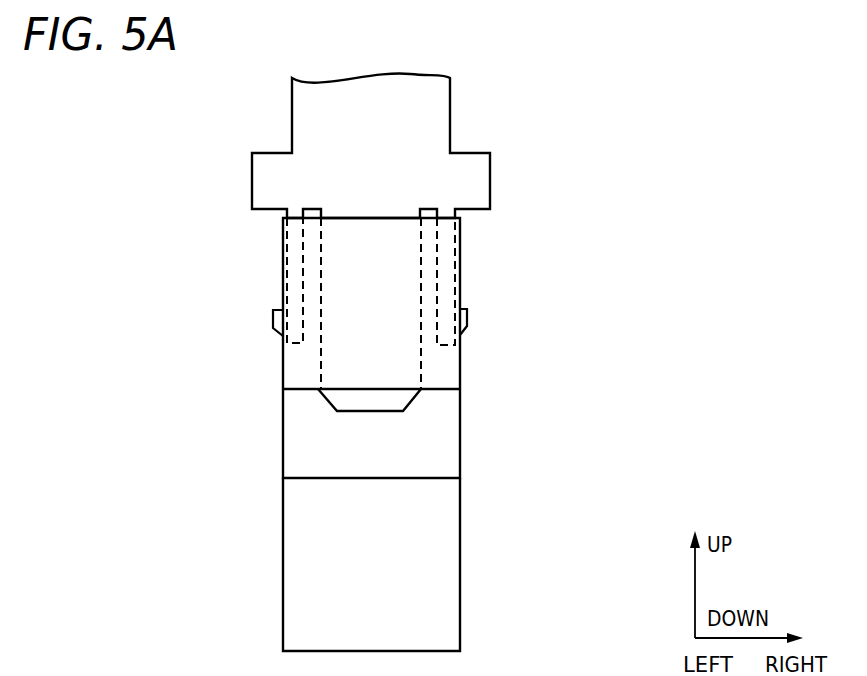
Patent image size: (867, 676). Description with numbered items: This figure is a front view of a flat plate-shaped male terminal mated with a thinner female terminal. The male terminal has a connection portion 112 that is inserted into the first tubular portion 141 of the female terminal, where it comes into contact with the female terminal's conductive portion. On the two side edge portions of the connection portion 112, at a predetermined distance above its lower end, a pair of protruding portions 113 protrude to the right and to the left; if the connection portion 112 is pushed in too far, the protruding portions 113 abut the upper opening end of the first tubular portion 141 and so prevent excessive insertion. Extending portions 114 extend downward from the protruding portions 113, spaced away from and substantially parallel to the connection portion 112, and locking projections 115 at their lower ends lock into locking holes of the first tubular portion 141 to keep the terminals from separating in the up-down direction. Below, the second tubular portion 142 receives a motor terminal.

The connection portion 112 is at (397, 400).
The protruding portions 113 is at (476, 182).
The extending portions 114 is at (293, 259).
The locking projections 115 is at (277, 316).
The first tubular portion 141 is at (297, 366).
The second tubular portion 142 is at (428, 560).